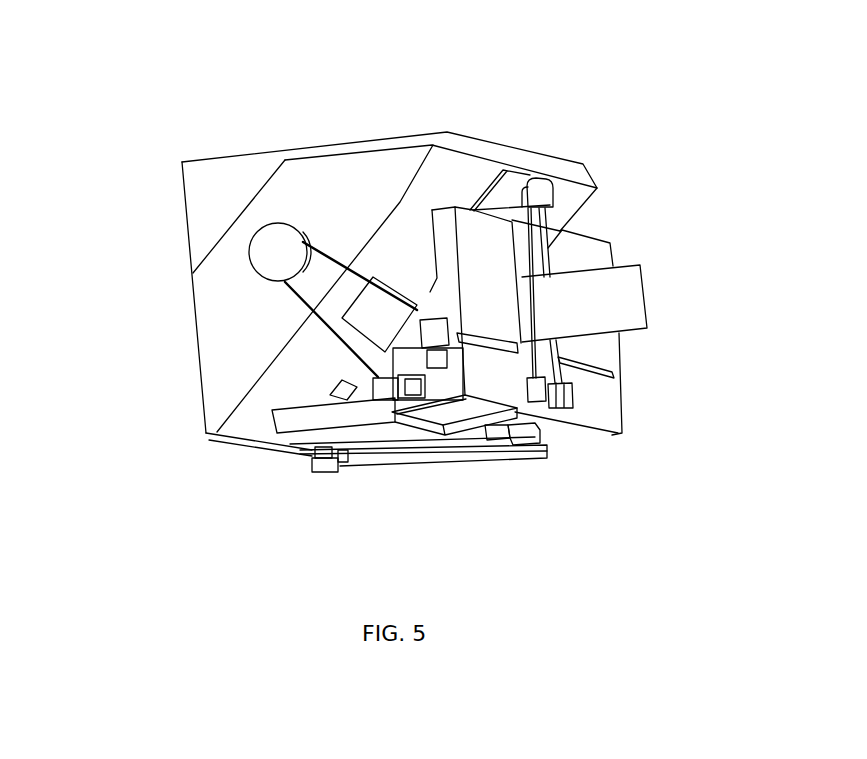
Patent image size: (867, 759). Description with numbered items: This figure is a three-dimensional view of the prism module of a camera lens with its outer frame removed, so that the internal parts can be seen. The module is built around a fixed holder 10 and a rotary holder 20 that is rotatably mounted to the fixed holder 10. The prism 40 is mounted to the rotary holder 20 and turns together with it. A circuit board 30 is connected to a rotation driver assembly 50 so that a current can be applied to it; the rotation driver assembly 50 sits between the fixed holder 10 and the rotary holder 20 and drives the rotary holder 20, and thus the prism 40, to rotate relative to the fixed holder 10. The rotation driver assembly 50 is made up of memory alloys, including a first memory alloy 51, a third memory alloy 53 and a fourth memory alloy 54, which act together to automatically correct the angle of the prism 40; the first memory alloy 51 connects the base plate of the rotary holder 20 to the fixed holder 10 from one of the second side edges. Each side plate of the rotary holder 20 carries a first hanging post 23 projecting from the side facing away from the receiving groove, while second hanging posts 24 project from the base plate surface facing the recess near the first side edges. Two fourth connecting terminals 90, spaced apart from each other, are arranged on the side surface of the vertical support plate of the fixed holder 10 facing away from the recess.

The fixed holder 10 is at (333, 423).
The rotary holder 20 is at (210, 297).
The first hanging post 23 is at (286, 238).
The second hanging post 24 is at (537, 173).
The circuit board 30 is at (633, 303).
The prism 40 is at (222, 170).
The rotation driver assembly 50 is at (330, 370).
The first memory alloy 51 is at (293, 298).
The third memory alloy 53 is at (428, 463).
The fourth memory alloy 54 is at (548, 248).
The fourth connecting terminal 90 is at (573, 397).